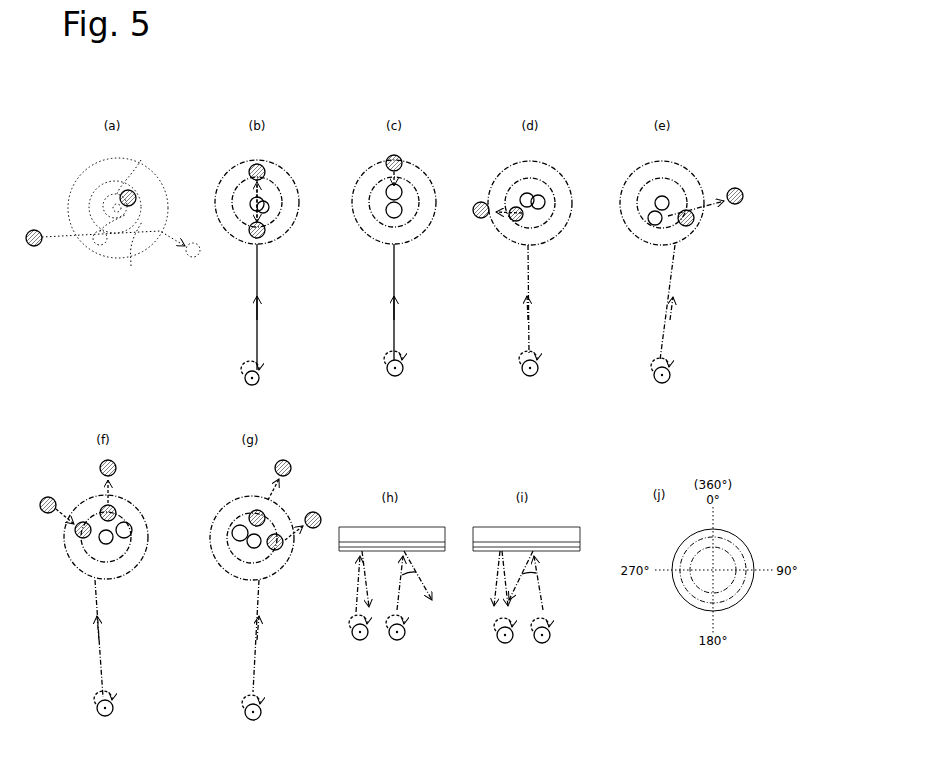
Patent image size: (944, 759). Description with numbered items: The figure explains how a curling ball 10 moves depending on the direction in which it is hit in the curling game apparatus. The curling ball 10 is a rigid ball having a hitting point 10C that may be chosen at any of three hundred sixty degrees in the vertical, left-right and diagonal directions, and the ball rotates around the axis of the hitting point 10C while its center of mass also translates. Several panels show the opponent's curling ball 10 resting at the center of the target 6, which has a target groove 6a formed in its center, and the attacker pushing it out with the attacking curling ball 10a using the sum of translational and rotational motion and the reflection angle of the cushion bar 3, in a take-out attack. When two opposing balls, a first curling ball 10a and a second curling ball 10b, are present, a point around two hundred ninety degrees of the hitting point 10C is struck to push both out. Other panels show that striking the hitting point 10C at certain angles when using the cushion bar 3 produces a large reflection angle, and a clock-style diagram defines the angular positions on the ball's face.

The cushion bar 3 is at (420, 532).
The target 6 is at (168, 200).
The target groove 6a is at (228, 190).
The curling ball 10 is at (756, 529).
The first curling ball 10a is at (136, 193).
The second curling ball 10b is at (117, 466).
The hitting point 10C is at (260, 375).